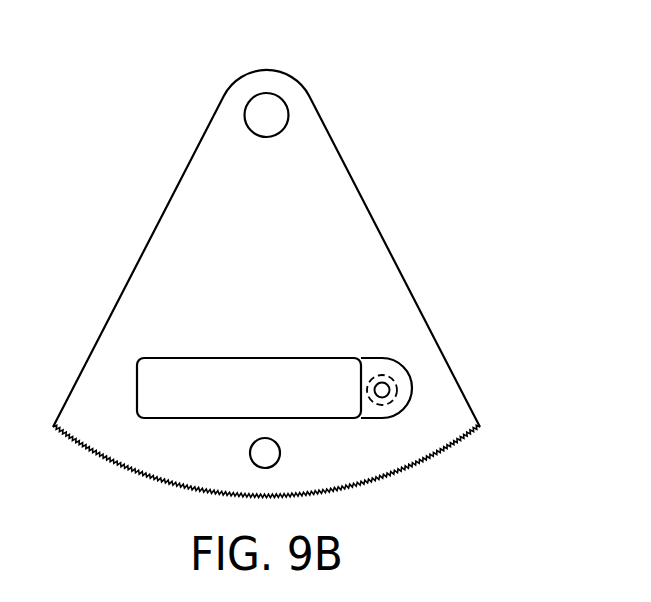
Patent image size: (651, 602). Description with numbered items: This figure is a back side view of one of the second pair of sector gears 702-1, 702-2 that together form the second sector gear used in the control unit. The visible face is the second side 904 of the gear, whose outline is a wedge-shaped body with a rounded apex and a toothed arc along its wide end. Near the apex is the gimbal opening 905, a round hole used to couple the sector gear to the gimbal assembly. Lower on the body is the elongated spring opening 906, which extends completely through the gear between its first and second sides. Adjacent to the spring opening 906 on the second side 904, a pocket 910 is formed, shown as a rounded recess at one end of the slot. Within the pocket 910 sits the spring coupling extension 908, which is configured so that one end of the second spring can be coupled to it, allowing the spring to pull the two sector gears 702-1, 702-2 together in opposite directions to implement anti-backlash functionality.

The sector gear 702-1 is at (317, 284).
The sector gear 702-2 is at (266, 284).
The second side 904 is at (296, 270).
The gimbal opening 905 is at (268, 104).
The spring opening 906 is at (262, 402).
The spring coupling extension 908 is at (384, 393).
The pocket 910 is at (383, 373).